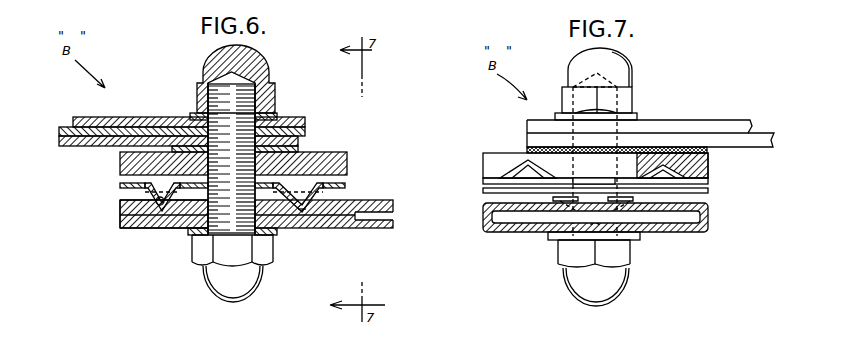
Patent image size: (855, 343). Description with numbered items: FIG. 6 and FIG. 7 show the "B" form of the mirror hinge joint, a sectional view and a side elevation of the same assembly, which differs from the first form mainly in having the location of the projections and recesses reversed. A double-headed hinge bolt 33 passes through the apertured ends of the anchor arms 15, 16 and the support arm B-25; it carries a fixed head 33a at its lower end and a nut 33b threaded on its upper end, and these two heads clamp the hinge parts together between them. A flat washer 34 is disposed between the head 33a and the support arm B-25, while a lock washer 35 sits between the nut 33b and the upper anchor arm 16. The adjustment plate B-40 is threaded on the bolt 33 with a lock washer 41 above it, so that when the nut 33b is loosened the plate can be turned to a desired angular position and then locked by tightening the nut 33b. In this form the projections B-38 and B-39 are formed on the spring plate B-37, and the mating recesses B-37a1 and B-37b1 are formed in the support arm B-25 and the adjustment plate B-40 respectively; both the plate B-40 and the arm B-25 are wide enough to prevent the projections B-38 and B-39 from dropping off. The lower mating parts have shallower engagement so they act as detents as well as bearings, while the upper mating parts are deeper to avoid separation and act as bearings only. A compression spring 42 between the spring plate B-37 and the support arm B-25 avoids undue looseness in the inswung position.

In FIG. 6, the anchor arm 15 is at (66, 146).
In FIG. 7, the anchor arm 15 is at (769, 134).
In FIG. 6, the upper anchor arm 16 is at (73, 117).
In FIG. 7, the upper anchor arm 16 is at (738, 120).
In FIG. 6, the hinge bolt 33 is at (200, 290).
In FIG. 7, the hinge bolt 33 is at (571, 311).
In FIG. 6, the head 33a is at (245, 292).
In FIG. 7, the head 33a is at (614, 290).
In FIG. 6, the nut 33b is at (262, 64).
In FIG. 7, the nut 33b is at (620, 60).
In FIG. 6, the flat washer 34 is at (192, 238).
In FIG. 7, the flat washer 34 is at (594, 236).
In FIG. 6, the lock washer 35 is at (278, 116).
In FIG. 7, the lock washer 35 is at (557, 117).
In FIG. 6, the lock washer 41 is at (300, 149).
In FIG. 7, the lock washer 41 is at (527, 151).
In FIG. 6, the compression spring 42 is at (276, 200).
In FIG. 7, the compression spring 42 is at (563, 200).
In FIG. 6, the support arm B-25 is at (325, 230).
In FIG. 6, the spring plate B-37 is at (120, 185).
In FIG. 7, the spring plate B-37 is at (708, 192).
In FIG. 6, the recesses B-37a1 is at (146, 230).
In FIG. 7, the recesses B-37a1 is at (640, 232).
In FIG. 7, the recesses B-37b1 is at (663, 148).
In FIG. 6, the projections B-38 is at (150, 196).
In FIG. 7, the projections B-38 is at (548, 205).
In FIG. 7, the projections B-39 is at (483, 181).
In FIG. 6, the adjustment plate B-40 is at (348, 157).
In FIG. 7, the adjustment plate B-40 is at (708, 163).